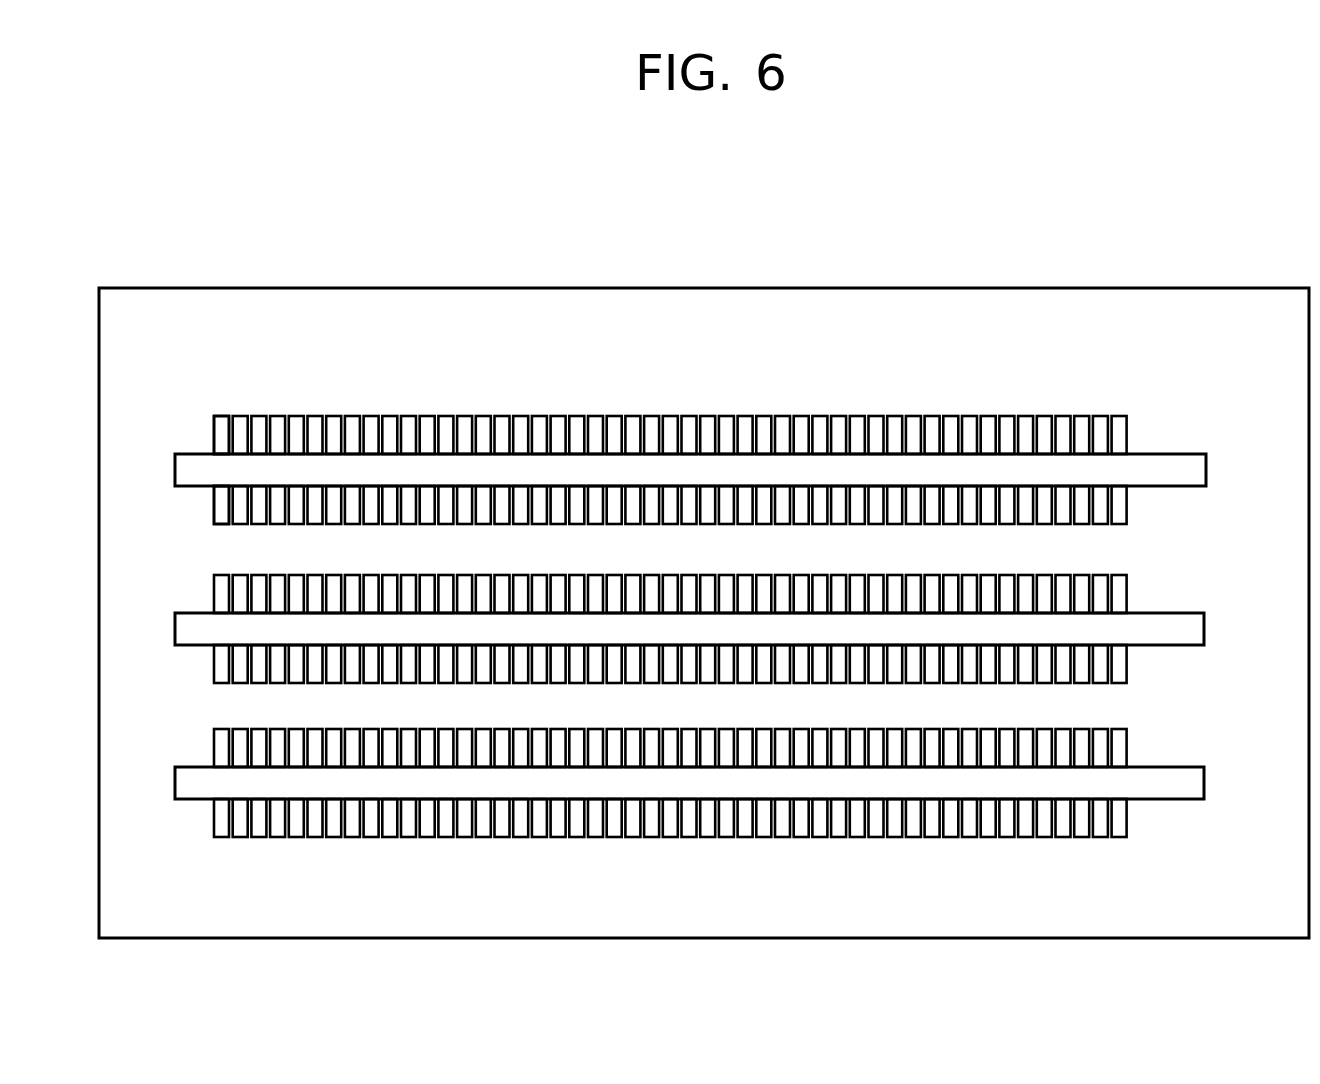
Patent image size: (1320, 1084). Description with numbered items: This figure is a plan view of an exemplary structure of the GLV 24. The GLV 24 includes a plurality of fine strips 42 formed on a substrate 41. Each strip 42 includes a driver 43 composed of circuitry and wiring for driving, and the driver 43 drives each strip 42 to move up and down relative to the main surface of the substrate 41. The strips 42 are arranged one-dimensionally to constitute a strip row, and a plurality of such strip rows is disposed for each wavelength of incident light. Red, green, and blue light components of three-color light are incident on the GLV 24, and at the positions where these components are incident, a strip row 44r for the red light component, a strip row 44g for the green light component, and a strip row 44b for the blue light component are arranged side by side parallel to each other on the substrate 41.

The GLV 24 is at (1085, 250).
The substrate 41 is at (897, 287).
The strip 42 is at (670, 441).
The driver 43 is at (223, 428).
The strip row for the red light component 44r is at (699, 441).
The strip row for the green light component 44g is at (1167, 588).
The strip row for the blue light component 44b is at (1170, 748).